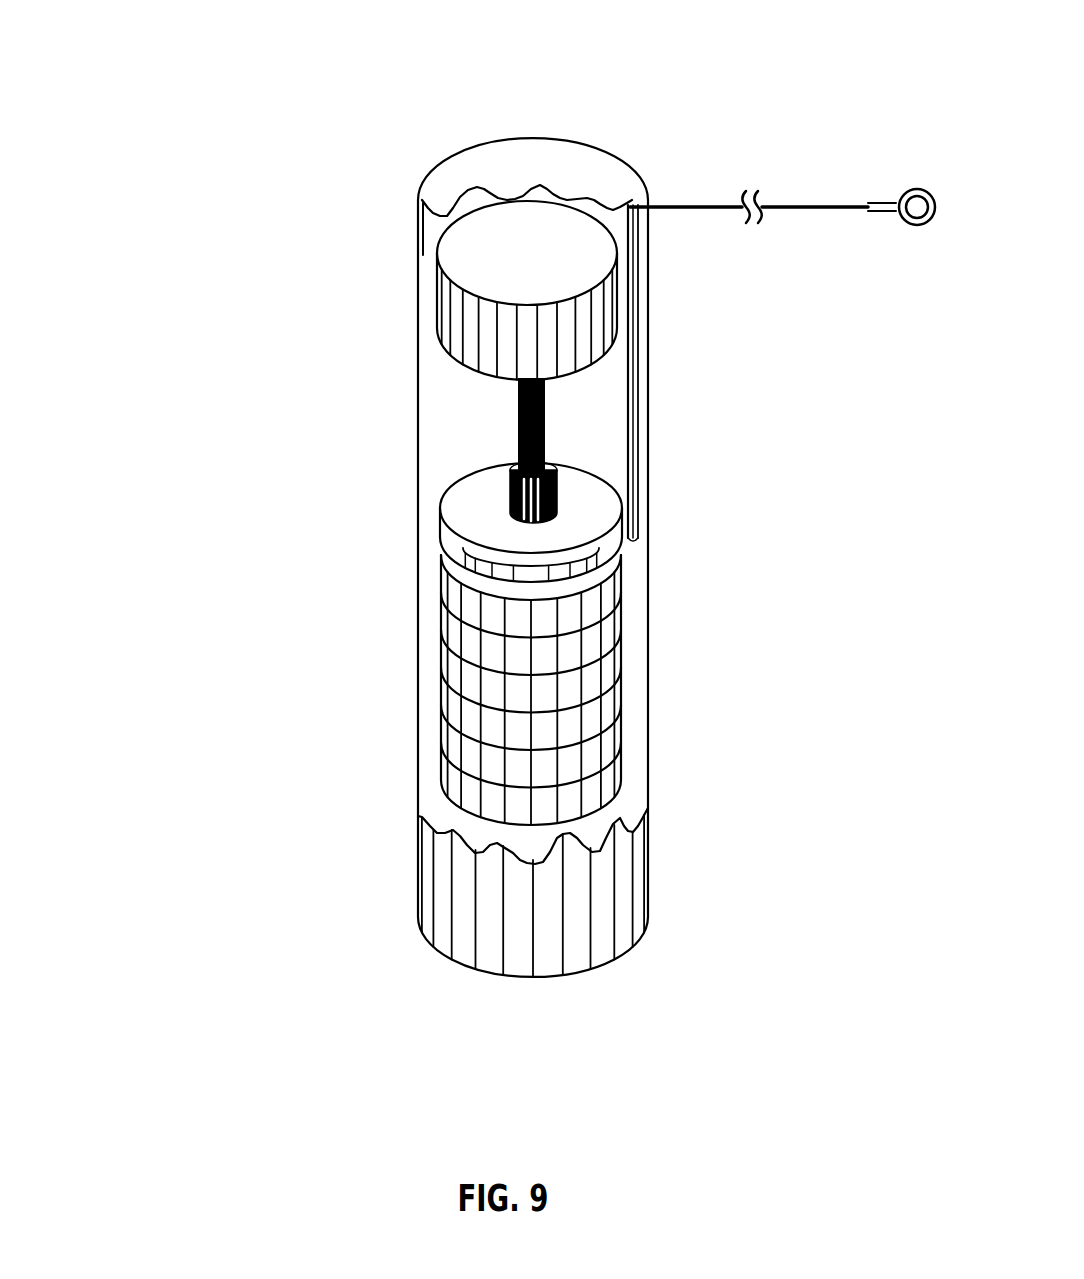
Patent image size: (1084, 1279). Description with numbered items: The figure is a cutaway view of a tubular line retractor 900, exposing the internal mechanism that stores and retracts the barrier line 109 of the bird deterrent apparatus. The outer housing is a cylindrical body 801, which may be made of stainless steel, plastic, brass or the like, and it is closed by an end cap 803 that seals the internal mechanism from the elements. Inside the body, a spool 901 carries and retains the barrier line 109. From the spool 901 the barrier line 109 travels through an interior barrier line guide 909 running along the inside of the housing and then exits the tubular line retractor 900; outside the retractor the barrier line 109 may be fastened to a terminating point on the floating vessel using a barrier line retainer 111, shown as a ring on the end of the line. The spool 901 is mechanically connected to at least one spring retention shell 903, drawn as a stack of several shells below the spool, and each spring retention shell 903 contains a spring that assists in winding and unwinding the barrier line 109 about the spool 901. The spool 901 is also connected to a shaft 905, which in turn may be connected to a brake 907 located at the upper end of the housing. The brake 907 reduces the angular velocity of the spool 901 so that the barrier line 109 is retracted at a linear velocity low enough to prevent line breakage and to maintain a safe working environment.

The tubular line retractor 900 is at (270, 158).
The brake 907 is at (495, 257).
The end cap 803 is at (532, 167).
The barrier line 109 is at (697, 205).
The barrier line retainer 111 is at (915, 188).
The shaft 905 is at (517, 412).
The interior barrier line guide 909 is at (635, 372).
The spool 901 is at (482, 512).
The spring retention shell 903 is at (525, 622).
The cylindrical body 801 is at (547, 920).